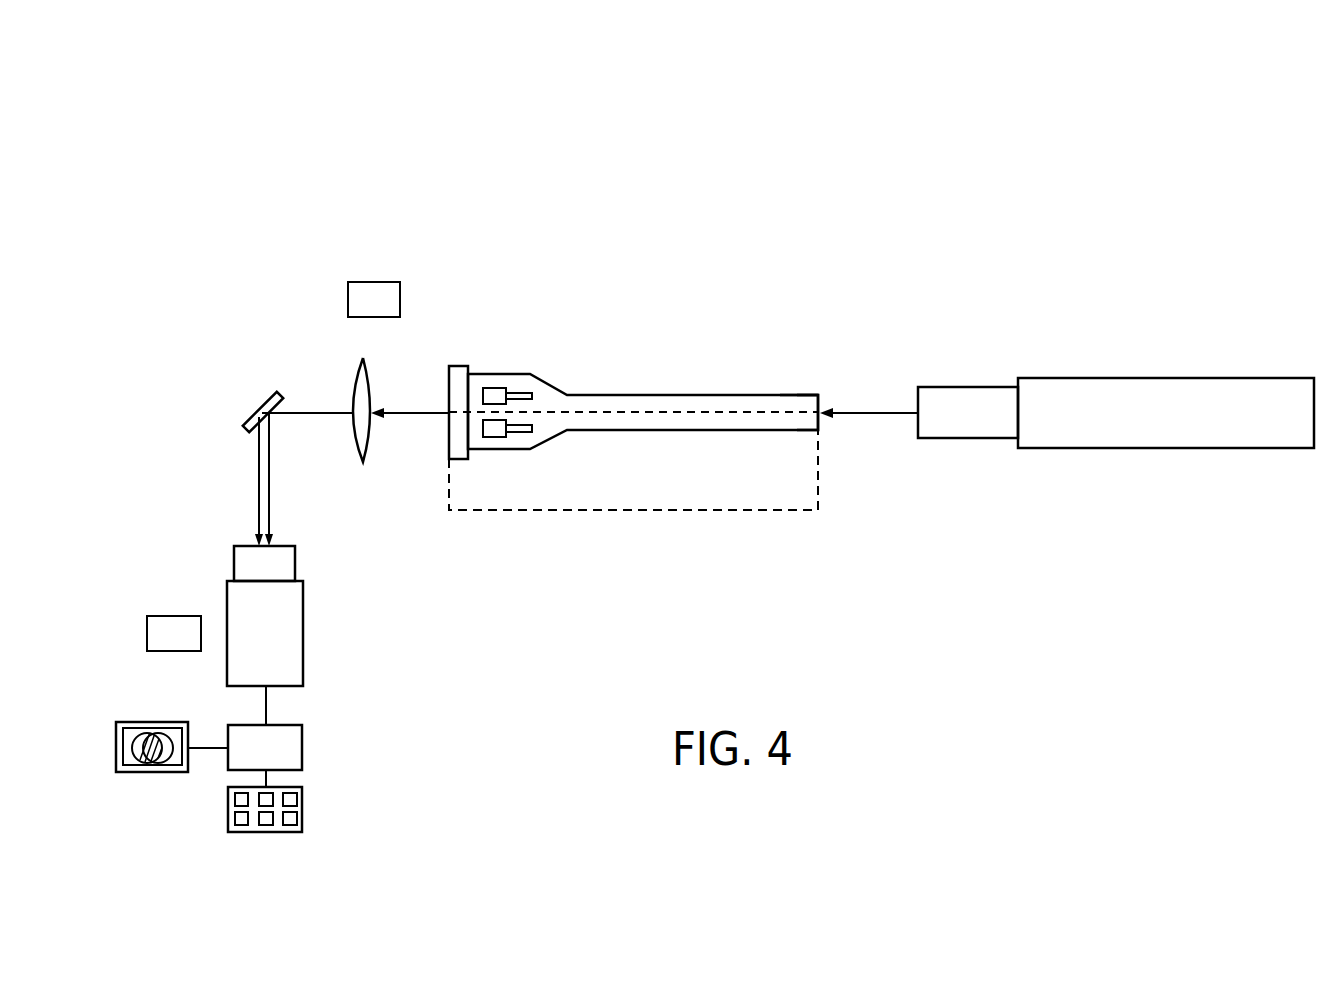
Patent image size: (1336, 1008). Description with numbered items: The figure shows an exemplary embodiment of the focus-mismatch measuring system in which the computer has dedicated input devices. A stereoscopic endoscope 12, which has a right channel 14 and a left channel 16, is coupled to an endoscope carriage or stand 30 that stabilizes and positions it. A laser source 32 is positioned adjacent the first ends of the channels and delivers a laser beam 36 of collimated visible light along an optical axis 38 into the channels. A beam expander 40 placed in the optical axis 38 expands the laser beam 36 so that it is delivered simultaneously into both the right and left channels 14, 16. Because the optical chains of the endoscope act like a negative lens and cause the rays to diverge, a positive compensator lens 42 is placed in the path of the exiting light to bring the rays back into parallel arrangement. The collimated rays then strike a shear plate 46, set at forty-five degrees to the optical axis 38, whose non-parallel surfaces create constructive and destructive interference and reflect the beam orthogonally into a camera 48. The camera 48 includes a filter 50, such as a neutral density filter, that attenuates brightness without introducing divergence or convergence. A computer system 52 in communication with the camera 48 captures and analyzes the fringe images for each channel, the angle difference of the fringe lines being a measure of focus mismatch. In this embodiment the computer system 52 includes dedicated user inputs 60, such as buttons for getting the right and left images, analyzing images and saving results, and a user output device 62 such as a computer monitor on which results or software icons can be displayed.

The stereoscopic endoscope 12 is at (627, 393).
The right channel 14 is at (797, 422).
The left channel 16 is at (795, 400).
The endoscope carriage or stand 30 is at (643, 492).
The laser source 32 is at (1181, 387).
The laser beam 36 is at (883, 413).
The optical axis 38 is at (868, 413).
The beam expander 40 is at (955, 387).
The compensator lens 42 is at (352, 362).
The shear plate 46 is at (253, 402).
The camera 48 is at (319, 644).
The filter 50 is at (312, 562).
The computer system 52 is at (302, 745).
The dedicated user inputs 60 is at (302, 810).
The user output device 62 is at (135, 772).